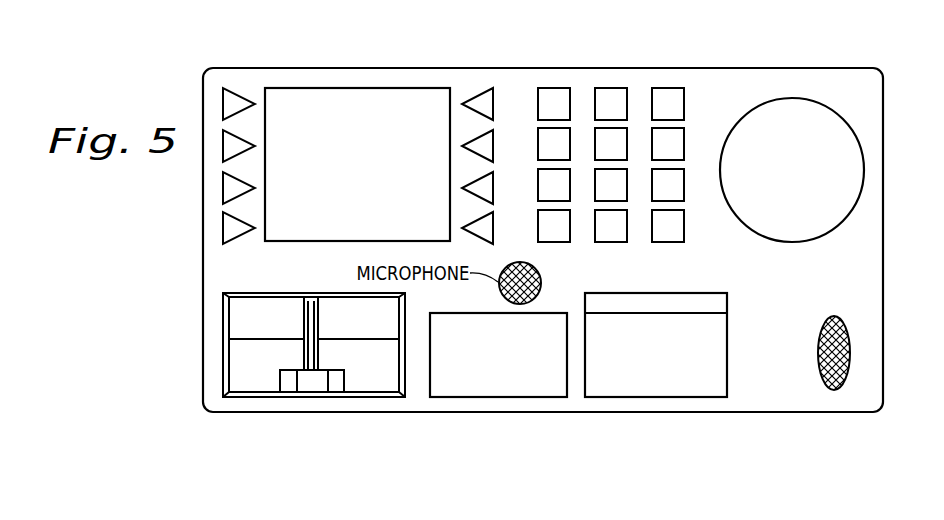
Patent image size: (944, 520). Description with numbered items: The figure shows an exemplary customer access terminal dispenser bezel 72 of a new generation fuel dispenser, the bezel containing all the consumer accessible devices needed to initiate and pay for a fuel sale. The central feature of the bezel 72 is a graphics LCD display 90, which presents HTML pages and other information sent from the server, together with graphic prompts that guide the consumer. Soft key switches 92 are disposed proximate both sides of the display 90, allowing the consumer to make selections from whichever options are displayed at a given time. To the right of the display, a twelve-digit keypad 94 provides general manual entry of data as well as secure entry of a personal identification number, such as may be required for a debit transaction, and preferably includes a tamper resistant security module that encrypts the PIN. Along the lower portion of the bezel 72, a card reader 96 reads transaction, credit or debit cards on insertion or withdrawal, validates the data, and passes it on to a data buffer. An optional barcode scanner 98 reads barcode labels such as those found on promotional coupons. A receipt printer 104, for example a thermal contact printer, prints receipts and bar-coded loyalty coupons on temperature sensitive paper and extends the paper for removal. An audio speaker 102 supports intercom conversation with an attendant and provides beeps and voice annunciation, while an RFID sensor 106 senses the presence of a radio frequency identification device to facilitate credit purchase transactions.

The dispenser bezel 72 is at (156, 206).
The graphics LCD display 90 is at (341, 202).
The soft key switches 92 is at (234, 80).
The keypad 94 is at (683, 61).
The card reader 96 is at (318, 398).
The barcode scanner 98 is at (498, 398).
The audio speaker 102 is at (833, 390).
The receipt printer 104 is at (727, 345).
The RFID sensor 106 is at (790, 242).